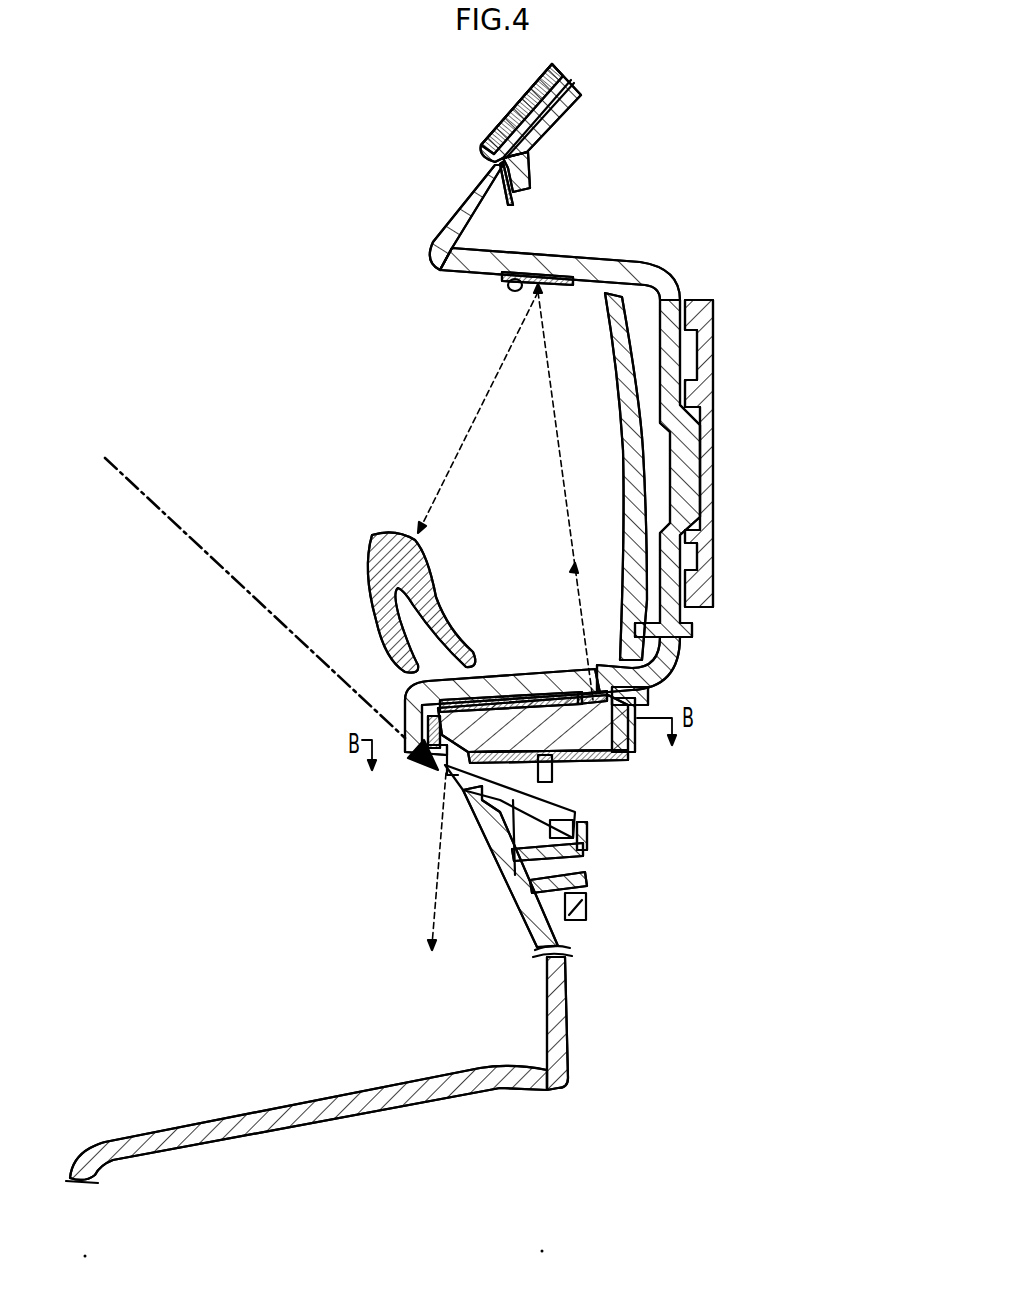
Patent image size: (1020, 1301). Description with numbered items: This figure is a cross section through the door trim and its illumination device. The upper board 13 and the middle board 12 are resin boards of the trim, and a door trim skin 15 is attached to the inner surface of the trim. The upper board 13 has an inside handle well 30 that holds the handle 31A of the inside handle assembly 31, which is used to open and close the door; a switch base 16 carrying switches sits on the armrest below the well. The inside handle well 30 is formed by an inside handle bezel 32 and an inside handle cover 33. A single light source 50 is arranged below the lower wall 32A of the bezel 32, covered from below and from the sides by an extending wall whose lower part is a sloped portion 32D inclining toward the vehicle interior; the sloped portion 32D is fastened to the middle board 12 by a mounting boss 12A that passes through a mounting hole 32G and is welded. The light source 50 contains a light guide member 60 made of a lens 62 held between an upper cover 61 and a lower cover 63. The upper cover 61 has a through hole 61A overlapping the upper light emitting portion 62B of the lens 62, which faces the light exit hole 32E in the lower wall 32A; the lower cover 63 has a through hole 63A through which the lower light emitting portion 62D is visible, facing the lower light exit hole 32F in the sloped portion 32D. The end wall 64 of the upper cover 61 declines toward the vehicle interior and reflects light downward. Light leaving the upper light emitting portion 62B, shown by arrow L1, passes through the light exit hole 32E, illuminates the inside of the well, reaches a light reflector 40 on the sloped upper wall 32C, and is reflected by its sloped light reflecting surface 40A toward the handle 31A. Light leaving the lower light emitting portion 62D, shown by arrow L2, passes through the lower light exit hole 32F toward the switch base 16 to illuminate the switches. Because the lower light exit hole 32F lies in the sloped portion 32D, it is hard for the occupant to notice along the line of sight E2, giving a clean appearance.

The upper board 13 is at (550, 116).
The door trim skin 15 is at (521, 98).
The inside handle bezel 32 is at (450, 206).
The upper wall 32C is at (593, 270).
The inside handle well 30 is at (452, 287).
The light reflector 40 is at (557, 278).
The light reflecting surface 40A is at (517, 278).
The inside handle cover 33 is at (650, 295).
The light exit hole 32E is at (586, 642).
The arrow L1 is at (600, 592).
The inside handle assembly 31 is at (333, 562).
The handle 31A is at (388, 538).
The line E2 is at (215, 570).
The lower wall 32A is at (516, 683).
The upper light emitting portion 62B is at (582, 700).
The end wall 64 is at (432, 697).
The lower light emitting portion 62D is at (448, 733).
The through hole 61A is at (645, 697).
The light source 50 is at (648, 748).
The lower cover 63 is at (613, 752).
The lens 62 is at (560, 735).
The upper cover 61 is at (525, 763).
The light guide member 60 is at (715, 760).
The lower light exit hole 32F is at (448, 773).
The through hole 63A is at (458, 783).
The arrow L2 is at (438, 871).
The mounting hole 32G is at (590, 850).
The mounting boss 12A is at (590, 896).
The sloped portion 32D is at (567, 925).
The middle board 12 is at (567, 1017).
The switch base 16 is at (318, 1098).